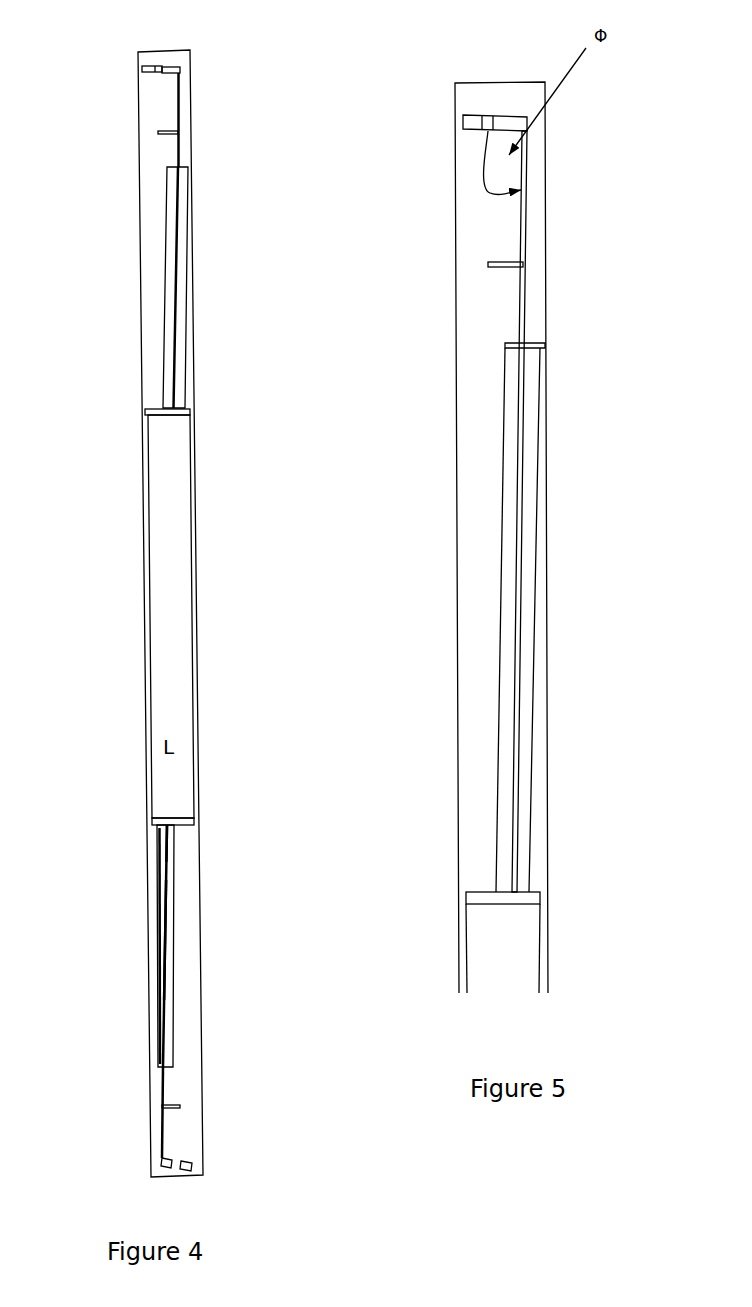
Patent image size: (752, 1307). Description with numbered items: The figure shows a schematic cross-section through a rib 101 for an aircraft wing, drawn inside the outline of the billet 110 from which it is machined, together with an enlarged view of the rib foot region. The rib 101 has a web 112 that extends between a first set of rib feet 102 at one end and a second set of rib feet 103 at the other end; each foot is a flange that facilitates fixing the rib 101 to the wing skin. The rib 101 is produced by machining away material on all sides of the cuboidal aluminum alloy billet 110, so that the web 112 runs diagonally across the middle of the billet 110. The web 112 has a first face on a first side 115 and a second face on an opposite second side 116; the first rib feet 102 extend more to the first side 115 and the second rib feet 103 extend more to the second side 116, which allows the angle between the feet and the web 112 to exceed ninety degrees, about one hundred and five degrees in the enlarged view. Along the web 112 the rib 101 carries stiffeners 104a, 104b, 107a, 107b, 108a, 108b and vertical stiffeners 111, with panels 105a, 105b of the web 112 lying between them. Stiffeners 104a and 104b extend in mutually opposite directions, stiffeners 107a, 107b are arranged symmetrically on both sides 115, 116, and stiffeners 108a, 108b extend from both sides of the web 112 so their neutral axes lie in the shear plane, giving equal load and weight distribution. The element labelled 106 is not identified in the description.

In FIG. 4, the rib 101 is at (146, 613).
In FIG. 4, the first set of rib feet 102 is at (159, 62).
In FIG. 5, the first set of rib feet 102 is at (513, 112).
In FIG. 4, the second set of rib feet 103 is at (165, 1178).
In FIG. 4, the stiffener 104a is at (162, 128).
In FIG. 5, the stiffener 104a is at (527, 265).
In FIG. 4, the stiffener 104b is at (178, 1105).
In FIG. 4, the panel 105a is at (172, 302).
In FIG. 5, the panel 105a is at (520, 593).
In FIG. 4, the panel 105b is at (162, 907).
In FIG. 4, the coaxial section 106 is at (171, 603).
In FIG. 4, the stiffener 107a is at (150, 408).
In FIG. 5, the stiffener 107a is at (490, 890).
In FIG. 4, the stiffener 107b is at (158, 820).
In FIG. 4, the stiffener 108a is at (165, 170).
In FIG. 5, the stiffener 108a is at (541, 346).
In FIG. 4, the stiffener 108b is at (157, 1066).
In FIG. 4, the billet 110 is at (192, 88).
In FIG. 5, the billet 110 is at (542, 186).
In FIG. 4, the vertical stiffener 111 is at (170, 861).
In FIG. 4, the web 112 is at (180, 340).
In FIG. 4, the first side 115 is at (160, 985).
In FIG. 4, the second side 116 is at (170, 951).